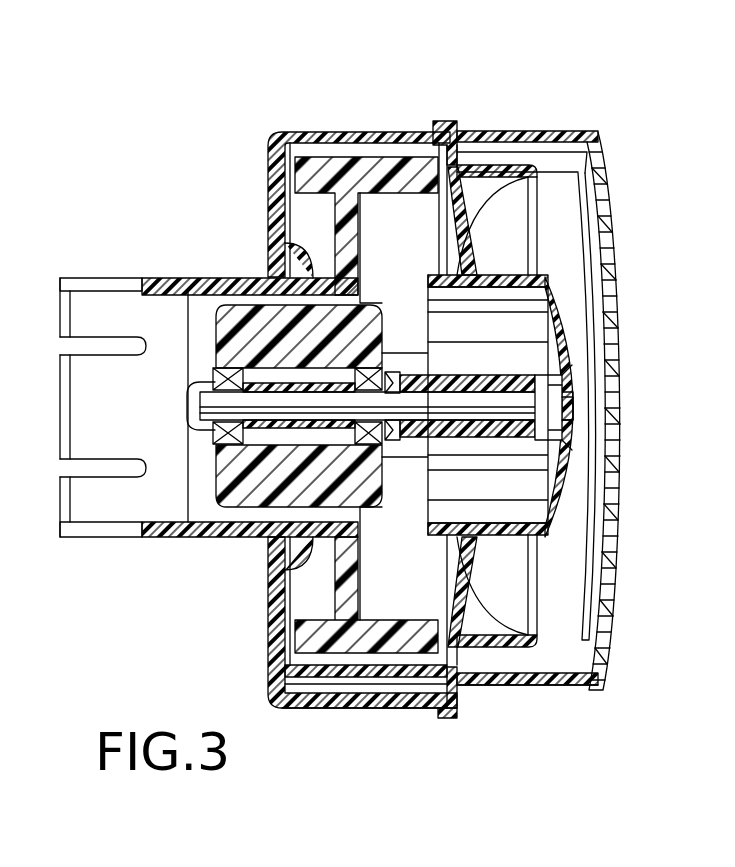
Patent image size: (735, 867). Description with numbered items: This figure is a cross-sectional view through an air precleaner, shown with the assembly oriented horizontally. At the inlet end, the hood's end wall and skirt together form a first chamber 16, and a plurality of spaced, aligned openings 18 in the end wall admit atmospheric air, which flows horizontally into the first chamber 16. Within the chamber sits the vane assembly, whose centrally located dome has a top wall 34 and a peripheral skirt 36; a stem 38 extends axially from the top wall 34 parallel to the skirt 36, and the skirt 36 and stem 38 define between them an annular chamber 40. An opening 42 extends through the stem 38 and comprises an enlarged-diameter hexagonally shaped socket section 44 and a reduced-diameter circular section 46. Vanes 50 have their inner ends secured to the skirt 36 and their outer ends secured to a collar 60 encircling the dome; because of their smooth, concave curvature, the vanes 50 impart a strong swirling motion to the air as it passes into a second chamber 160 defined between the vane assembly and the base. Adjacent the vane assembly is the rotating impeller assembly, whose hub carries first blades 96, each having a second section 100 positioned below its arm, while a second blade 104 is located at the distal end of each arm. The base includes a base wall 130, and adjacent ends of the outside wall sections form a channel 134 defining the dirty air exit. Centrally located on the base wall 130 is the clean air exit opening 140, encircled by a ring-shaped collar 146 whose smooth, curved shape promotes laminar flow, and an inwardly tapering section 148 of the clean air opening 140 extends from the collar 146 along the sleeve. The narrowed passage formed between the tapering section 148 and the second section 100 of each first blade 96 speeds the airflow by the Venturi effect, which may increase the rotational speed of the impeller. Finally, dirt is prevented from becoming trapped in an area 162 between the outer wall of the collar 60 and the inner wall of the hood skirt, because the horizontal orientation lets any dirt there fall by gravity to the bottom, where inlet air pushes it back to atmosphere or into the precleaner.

The first chamber 16 is at (545, 155).
The openings 18 is at (610, 550).
The top wall 34 is at (558, 313).
The peripheral skirt 36 is at (505, 277).
The stem 38 is at (503, 376).
The annular chamber 40 is at (447, 290).
The opening 42 is at (410, 413).
The socket section 44 is at (572, 390).
The circular section 46 is at (488, 413).
The vanes 50 is at (457, 241).
The collar 60 is at (484, 686).
The first blades 96 is at (353, 322).
The second section 100 is at (248, 498).
The second blade 104 is at (362, 167).
The base wall 130 is at (280, 190).
The channel 134 is at (352, 686).
The clean air exit opening 140 is at (140, 503).
The ring-shaped collar 146 is at (283, 622).
The inwardly tapering section 148 is at (220, 297).
The second chamber 160 is at (424, 135).
The area 162 is at (540, 660).